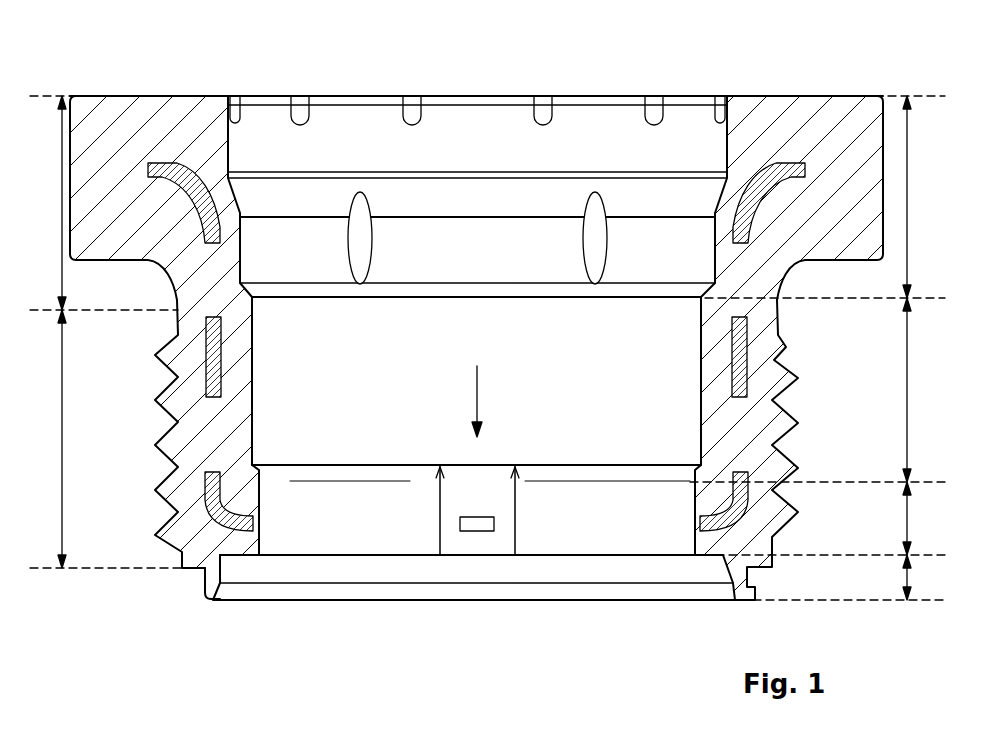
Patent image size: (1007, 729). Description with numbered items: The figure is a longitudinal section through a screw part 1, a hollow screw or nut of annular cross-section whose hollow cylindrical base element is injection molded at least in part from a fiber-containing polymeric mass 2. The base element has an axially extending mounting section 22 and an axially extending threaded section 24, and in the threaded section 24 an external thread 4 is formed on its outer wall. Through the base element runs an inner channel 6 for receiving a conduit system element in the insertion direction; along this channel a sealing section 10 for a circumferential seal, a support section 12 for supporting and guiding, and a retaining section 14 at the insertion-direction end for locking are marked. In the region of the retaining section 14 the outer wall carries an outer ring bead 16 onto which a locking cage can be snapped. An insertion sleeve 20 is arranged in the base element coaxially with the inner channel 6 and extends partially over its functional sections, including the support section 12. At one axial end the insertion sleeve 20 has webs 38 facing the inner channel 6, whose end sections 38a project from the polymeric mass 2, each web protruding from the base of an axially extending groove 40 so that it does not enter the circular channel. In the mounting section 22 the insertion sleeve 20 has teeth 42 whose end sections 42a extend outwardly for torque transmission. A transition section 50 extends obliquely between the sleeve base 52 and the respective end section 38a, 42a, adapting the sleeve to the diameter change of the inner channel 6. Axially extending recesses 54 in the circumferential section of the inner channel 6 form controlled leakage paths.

The screw part 1 is at (131, 70).
The polymeric mass 2 is at (857, 132).
The external thread 4 is at (158, 448).
The inner channel 6 is at (460, 263).
The sealing section 10 is at (819, 289).
The support section 12 is at (819, 518).
The retaining section 14 is at (844, 577).
The outer ring bead 16 is at (212, 605).
The insertion sleeve 20 is at (752, 346).
The mounting section 22 is at (103, 203).
The threaded section 24 is at (106, 439).
The webs 38 is at (718, 590).
The end section 38a is at (252, 530).
The groove 40 is at (512, 535).
The teeth 42 is at (200, 200).
The end section 42a is at (790, 165).
The transition section 50 is at (745, 185).
The sleeve base 52 is at (210, 357).
The recesses 54 is at (412, 103).